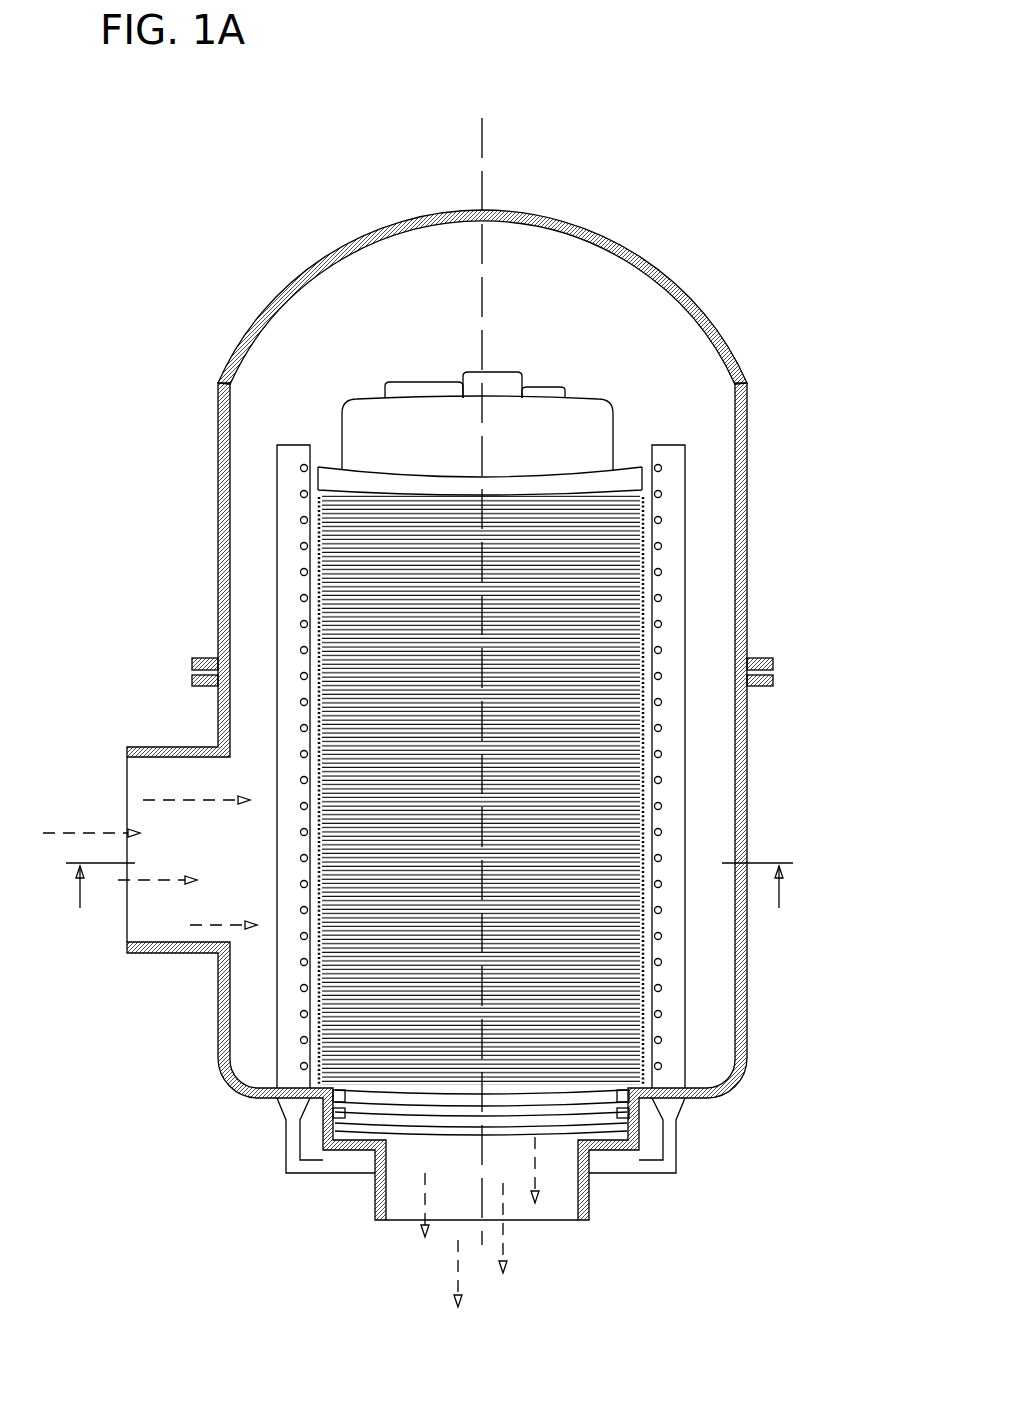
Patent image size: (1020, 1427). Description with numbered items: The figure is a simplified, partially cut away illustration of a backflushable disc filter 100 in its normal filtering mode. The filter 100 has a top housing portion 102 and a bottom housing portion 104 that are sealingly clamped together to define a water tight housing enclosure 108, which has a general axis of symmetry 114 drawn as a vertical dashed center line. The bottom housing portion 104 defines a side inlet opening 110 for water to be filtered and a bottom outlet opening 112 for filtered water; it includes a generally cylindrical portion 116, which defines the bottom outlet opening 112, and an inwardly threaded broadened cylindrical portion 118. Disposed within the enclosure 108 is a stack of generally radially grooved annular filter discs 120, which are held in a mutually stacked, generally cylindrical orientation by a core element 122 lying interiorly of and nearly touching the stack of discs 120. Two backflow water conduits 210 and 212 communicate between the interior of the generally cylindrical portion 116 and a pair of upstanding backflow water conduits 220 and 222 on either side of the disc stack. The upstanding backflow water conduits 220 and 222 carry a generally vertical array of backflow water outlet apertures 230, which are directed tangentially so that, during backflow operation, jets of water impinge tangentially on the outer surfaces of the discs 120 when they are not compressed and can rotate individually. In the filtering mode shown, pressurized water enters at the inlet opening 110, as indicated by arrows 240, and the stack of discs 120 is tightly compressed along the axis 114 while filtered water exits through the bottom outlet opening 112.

The filter 100 is at (673, 178).
The top housing portion 102 is at (748, 525).
The bottom housing portion 104 is at (748, 712).
The housing enclosure 108 is at (170, 422).
The inlet opening 110 is at (128, 768).
The bottom outlet opening 112 is at (563, 1210).
The axis of symmetry 114 is at (483, 141).
The generally cylindrical portion 116 is at (374, 1207).
The inwardly threaded broadened cylindrical portion 118 is at (314, 1122).
The stack of radially grooved annular filter discs 120 is at (642, 1030).
The core element 122 is at (583, 426).
The backflow water conduit 210 is at (285, 1164).
The backflow water conduit 212 is at (670, 1164).
The upstanding backflow water conduit 220 is at (277, 1042).
The upstanding backflow water conduit 222 is at (665, 594).
The backflow water outlet apertures 230 is at (300, 598).
The arrows 240 is at (143, 800).